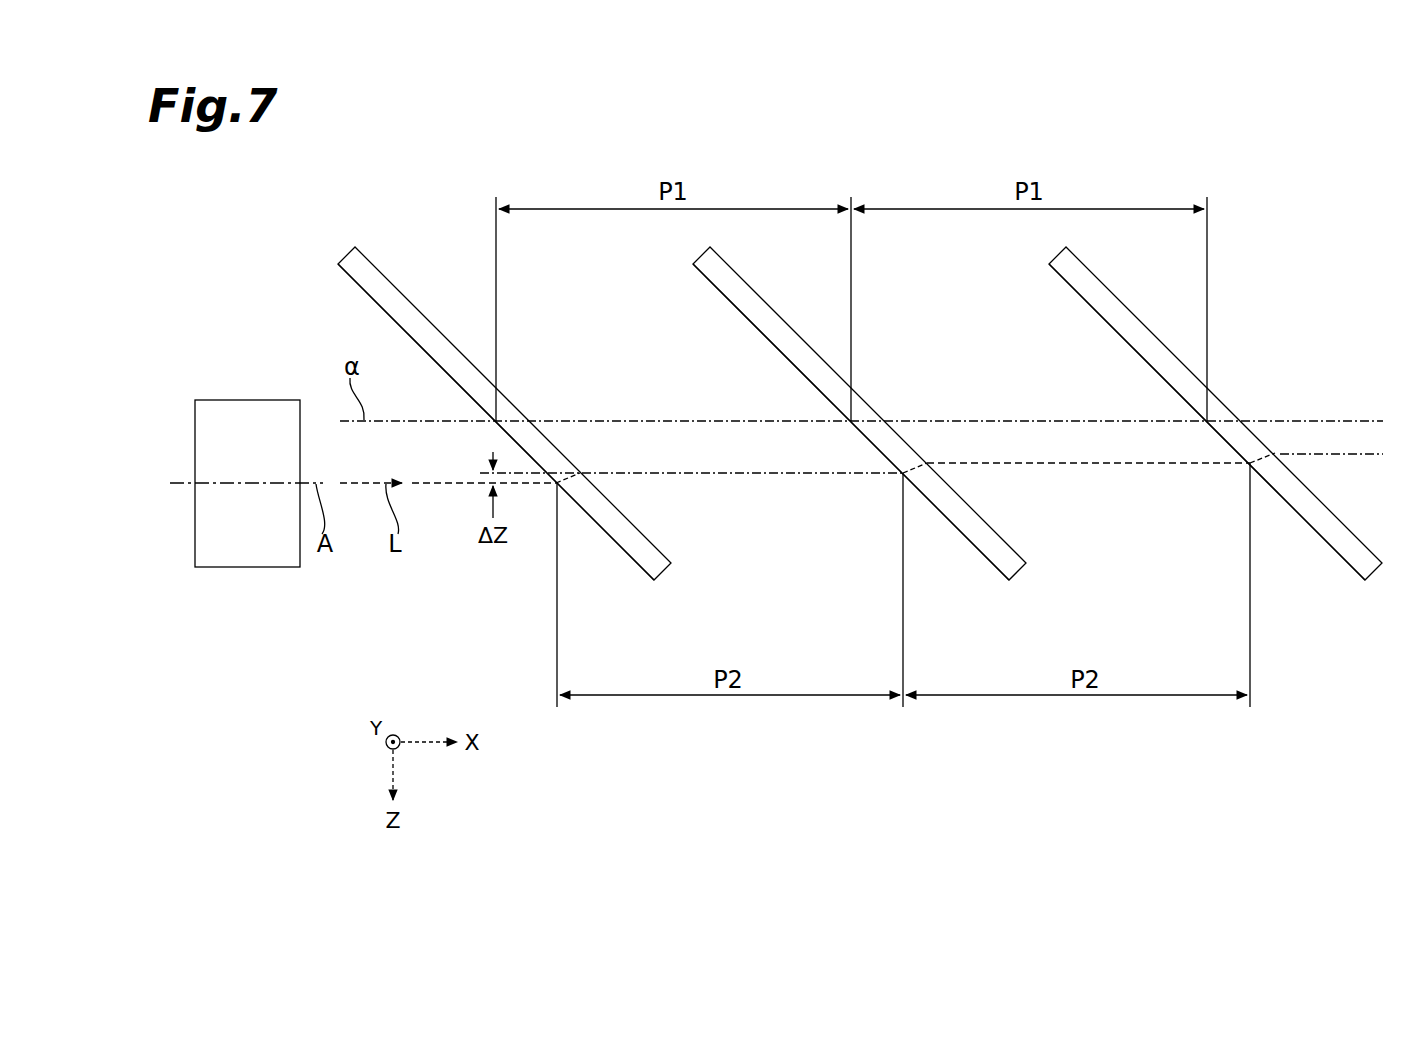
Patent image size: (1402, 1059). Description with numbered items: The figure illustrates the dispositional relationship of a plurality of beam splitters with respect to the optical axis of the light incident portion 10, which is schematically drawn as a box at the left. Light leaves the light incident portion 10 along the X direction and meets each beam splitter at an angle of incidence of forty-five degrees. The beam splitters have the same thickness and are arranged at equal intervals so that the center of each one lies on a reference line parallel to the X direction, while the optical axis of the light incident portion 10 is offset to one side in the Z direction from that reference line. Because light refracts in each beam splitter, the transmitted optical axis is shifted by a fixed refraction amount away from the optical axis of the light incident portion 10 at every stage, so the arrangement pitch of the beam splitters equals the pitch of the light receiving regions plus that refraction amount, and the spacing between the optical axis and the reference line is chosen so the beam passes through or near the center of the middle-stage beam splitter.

The light incident portion 10 is at (250, 400).